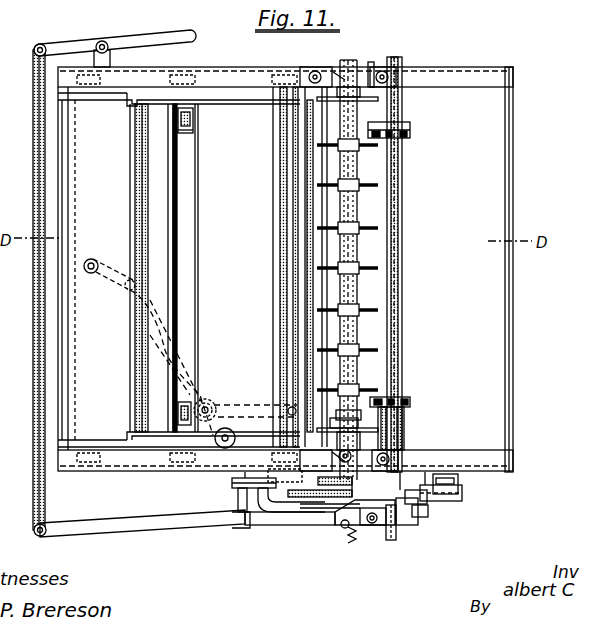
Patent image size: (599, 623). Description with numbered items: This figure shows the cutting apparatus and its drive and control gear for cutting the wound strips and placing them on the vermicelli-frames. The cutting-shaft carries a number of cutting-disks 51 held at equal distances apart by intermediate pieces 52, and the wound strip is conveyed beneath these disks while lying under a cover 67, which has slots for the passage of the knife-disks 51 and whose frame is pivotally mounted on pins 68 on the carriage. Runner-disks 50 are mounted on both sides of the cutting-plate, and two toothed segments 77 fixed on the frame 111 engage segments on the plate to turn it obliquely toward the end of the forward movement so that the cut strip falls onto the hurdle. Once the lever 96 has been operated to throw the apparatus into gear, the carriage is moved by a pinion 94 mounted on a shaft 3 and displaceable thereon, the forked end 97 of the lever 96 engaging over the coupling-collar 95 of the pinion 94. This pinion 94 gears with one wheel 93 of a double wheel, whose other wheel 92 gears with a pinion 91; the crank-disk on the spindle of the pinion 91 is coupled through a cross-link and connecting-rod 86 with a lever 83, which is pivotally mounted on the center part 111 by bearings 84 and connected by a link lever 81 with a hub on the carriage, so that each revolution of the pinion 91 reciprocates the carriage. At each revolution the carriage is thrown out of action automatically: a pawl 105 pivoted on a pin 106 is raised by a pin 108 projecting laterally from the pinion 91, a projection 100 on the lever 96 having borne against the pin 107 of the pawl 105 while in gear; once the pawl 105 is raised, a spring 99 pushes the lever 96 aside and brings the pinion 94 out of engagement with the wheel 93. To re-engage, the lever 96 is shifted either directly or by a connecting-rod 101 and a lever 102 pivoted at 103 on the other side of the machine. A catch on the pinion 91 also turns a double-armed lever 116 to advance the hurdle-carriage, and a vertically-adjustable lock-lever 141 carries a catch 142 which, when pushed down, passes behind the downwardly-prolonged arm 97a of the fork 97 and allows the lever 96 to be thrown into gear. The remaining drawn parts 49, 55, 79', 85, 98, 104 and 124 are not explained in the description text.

The shaft 3 is at (402, 211).
The bolt 49 is at (88, 466).
The runner-disks 50 is at (345, 67).
The cutting-disks 51 is at (366, 147).
The intermediate pieces 52 is at (351, 292).
The bracket 55 is at (368, 76).
The cover 67 is at (142, 138).
The pins 68 is at (193, 122).
The toothed segments 77 is at (411, 132).
The bolt 79' is at (170, 481).
The link lever 81 is at (107, 266).
The lever 83 is at (187, 370).
The bearings 84 is at (236, 436).
The roller 85 is at (210, 400).
The connecting-rod 86 is at (250, 405).
The pinion 91 is at (320, 518).
The wheel 92 is at (365, 520).
The wheel 93 is at (352, 425).
The pinion 94 is at (408, 468).
The coupling-collar 95 is at (402, 518).
The lever 96 is at (118, 526).
The forked end 97 is at (372, 523).
The downwardly-prolonged arm 97a is at (428, 510).
The pivot 98 is at (343, 530).
The spring 99 is at (351, 545).
The projection 100 is at (235, 510).
The connecting-rod 101 is at (40, 301).
The lever 102 is at (150, 38).
The pivot 103 is at (97, 43).
The standard 104 is at (247, 513).
The pawl 105 is at (232, 483).
The pin 106 is at (268, 475).
The pin 107 is at (238, 500).
The pin 108 is at (316, 485).
The center part 111 is at (455, 76).
The double-armed lever 116 is at (292, 505).
The block 124 is at (458, 485).
The lock-lever 141 is at (432, 498).
The catch 142 is at (416, 505).